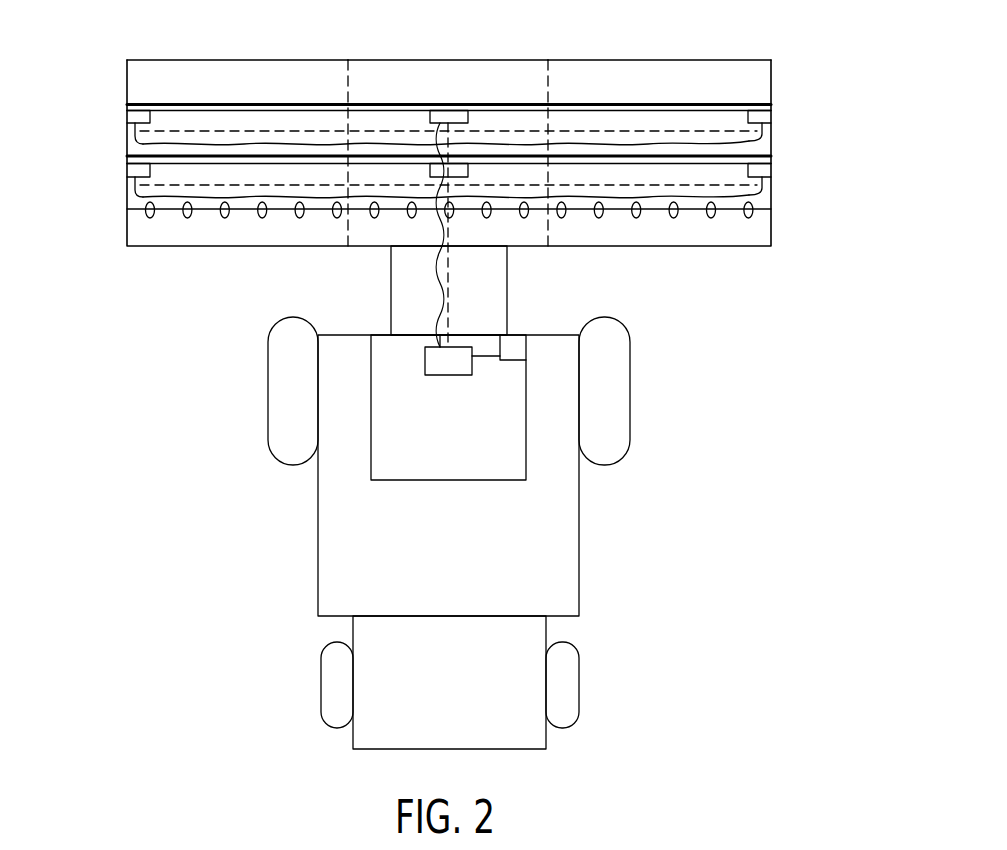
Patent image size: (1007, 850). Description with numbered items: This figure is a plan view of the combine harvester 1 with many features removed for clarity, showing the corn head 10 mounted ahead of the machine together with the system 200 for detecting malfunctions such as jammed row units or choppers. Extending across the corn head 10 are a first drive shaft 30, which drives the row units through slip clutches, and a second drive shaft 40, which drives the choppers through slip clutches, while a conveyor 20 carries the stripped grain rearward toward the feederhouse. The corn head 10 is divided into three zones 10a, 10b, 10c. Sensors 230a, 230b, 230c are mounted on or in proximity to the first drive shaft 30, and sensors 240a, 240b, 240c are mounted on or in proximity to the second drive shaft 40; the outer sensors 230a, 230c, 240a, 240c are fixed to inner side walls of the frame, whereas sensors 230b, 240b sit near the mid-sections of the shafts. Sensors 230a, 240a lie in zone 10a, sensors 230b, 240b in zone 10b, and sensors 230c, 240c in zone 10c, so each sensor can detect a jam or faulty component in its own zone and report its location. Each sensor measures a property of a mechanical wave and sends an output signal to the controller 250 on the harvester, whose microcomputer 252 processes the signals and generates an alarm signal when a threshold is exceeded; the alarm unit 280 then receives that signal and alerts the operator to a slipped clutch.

The combine harvester 1 is at (291, 619).
The corn head 10 is at (113, 227).
The first zone of the corn head 10a is at (245, 68).
The second zone of the corn head 10b is at (442, 68).
The third zone of the corn head 10c is at (653, 82).
The conveyor 20 is at (209, 217).
The first drive shaft 30 is at (748, 160).
The second drive shaft 40 is at (753, 106).
The system for detecting system malfunctions 200 is at (428, 311).
The sensor 230a is at (140, 176).
The sensor 230b is at (463, 170).
The sensor 230c is at (762, 170).
The sensor 240a is at (140, 122).
The sensor 240b is at (463, 120).
The sensor 240c is at (755, 115).
The controller 250 is at (450, 375).
The microcomputer 252 is at (433, 362).
The alarm unit 280 is at (515, 348).